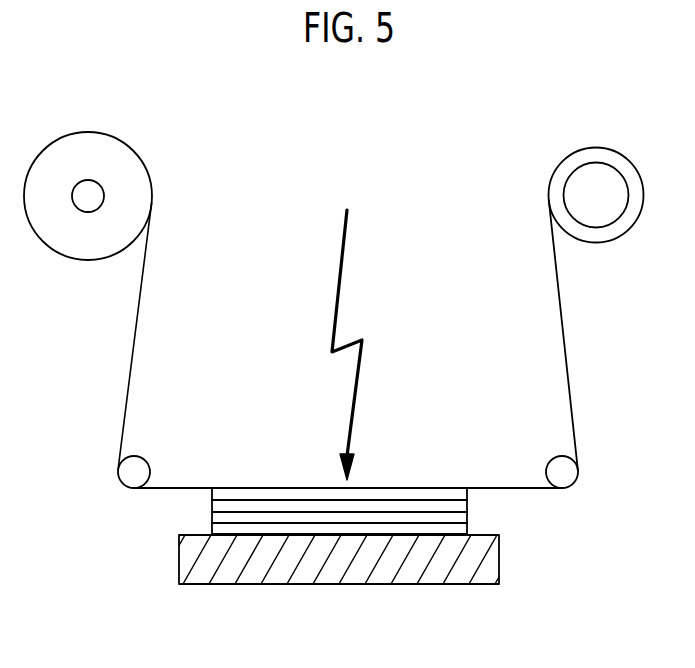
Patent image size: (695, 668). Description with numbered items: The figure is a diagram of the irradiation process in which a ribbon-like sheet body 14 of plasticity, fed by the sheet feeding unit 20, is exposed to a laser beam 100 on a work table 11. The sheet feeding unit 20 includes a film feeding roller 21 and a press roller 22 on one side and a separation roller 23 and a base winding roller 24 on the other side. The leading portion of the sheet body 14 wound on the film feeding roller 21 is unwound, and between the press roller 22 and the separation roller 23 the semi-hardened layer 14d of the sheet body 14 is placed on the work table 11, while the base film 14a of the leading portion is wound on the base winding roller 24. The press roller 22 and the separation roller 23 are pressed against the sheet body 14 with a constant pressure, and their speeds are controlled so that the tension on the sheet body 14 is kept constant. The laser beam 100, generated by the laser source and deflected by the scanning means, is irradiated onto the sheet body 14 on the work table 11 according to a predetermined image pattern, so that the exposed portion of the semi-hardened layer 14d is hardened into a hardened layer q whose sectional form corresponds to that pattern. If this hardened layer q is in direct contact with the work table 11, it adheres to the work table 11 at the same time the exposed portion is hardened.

The work table 11 is at (410, 577).
The sheet body 14 is at (126, 392).
The base film 14a is at (562, 322).
The semi-hardened layer 14d is at (292, 492).
The sheet feeding unit 20 is at (556, 98).
The film feeding roller 21 is at (88, 190).
The press roller 22 is at (130, 474).
The separation roller 23 is at (563, 473).
The base winding roller 24 is at (600, 192).
The laser beam 100 is at (337, 268).
The hardened layer q is at (460, 528).